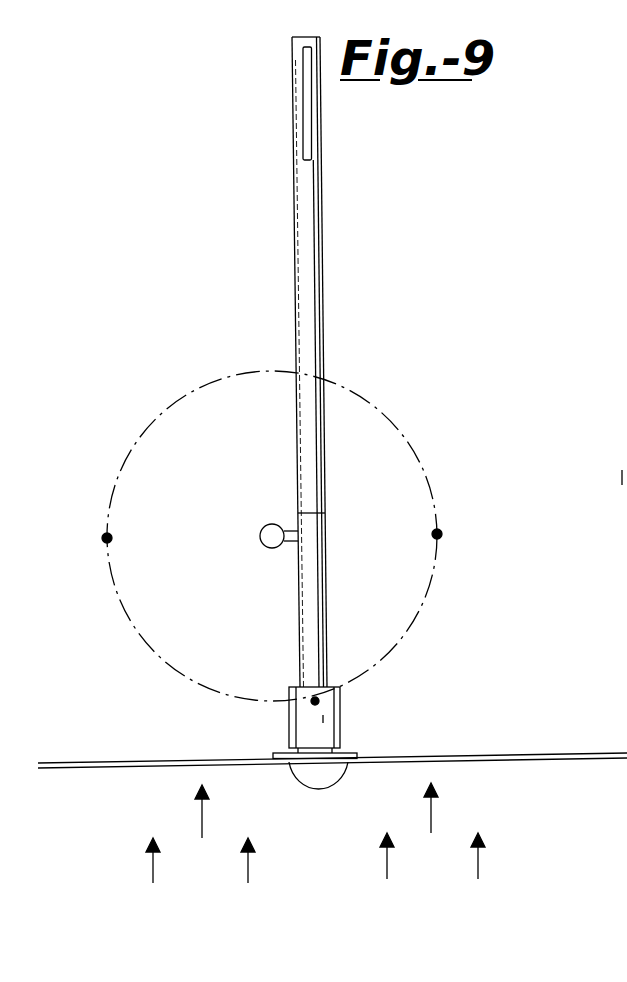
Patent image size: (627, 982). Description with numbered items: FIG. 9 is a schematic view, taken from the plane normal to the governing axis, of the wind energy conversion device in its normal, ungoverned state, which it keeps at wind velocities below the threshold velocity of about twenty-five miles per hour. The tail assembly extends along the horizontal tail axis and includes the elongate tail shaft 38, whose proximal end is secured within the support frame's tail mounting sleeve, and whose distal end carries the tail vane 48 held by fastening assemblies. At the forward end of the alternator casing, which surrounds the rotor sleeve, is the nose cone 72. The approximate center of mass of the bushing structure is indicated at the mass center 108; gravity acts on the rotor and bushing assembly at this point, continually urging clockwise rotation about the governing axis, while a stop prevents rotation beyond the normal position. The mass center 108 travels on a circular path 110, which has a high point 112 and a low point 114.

The tail shaft 38 is at (321, 230).
The tail vane 48 is at (303, 108).
The nose cone 72 is at (321, 795).
The mass center 108 is at (312, 704).
The circular path 110 is at (355, 392).
The high point 112 is at (441, 535).
The low point 114 is at (104, 538).